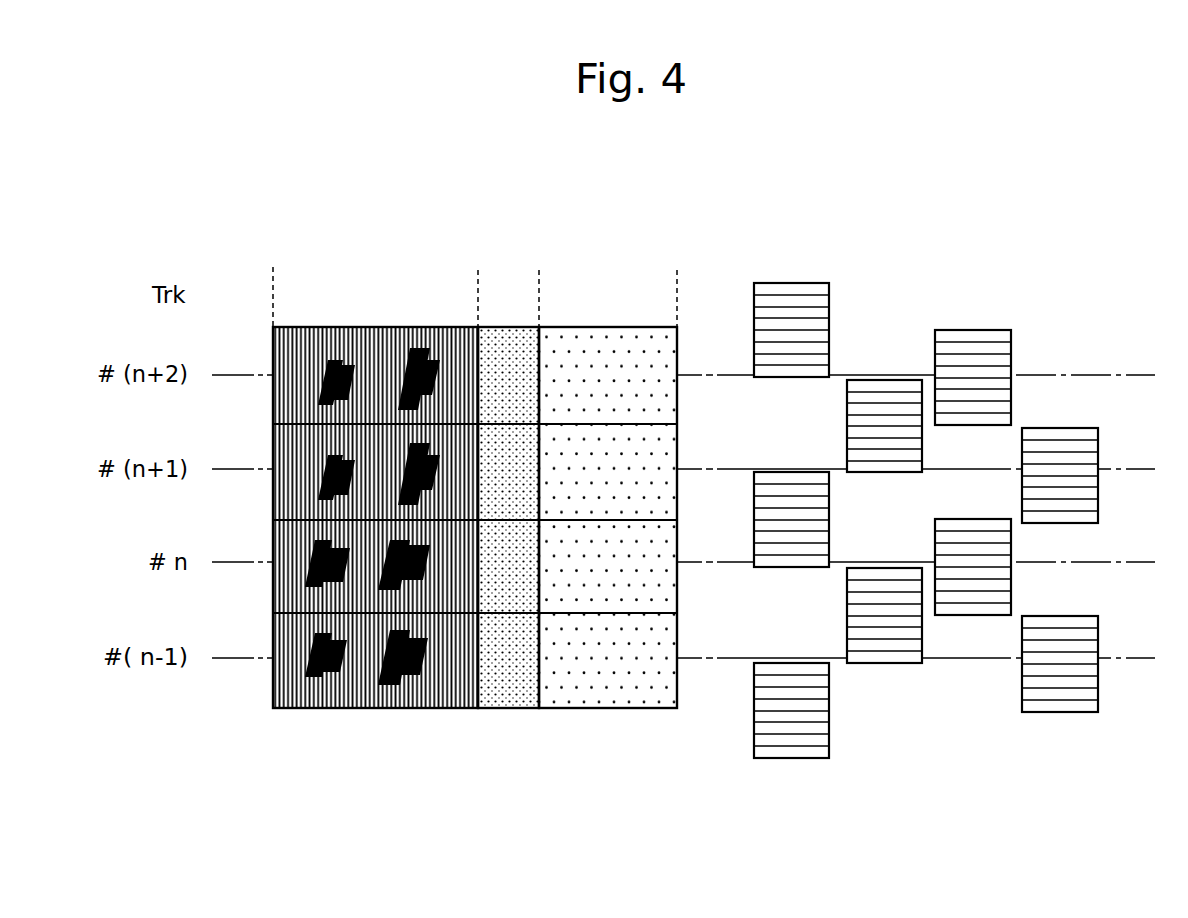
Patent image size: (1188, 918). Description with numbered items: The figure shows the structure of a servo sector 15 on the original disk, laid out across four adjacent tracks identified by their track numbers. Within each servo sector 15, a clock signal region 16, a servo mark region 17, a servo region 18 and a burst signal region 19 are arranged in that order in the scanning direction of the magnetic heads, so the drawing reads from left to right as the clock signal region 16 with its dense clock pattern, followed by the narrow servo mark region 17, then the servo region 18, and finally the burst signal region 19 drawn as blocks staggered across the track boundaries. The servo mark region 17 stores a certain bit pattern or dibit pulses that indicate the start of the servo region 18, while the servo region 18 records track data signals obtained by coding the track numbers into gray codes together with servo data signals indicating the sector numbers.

The servo sector 15 is at (683, 531).
The clock signal region 16 is at (476, 291).
The servo mark region 17 is at (537, 291).
The servo region 18 is at (675, 291).
The burst signal region 19 is at (1098, 275).